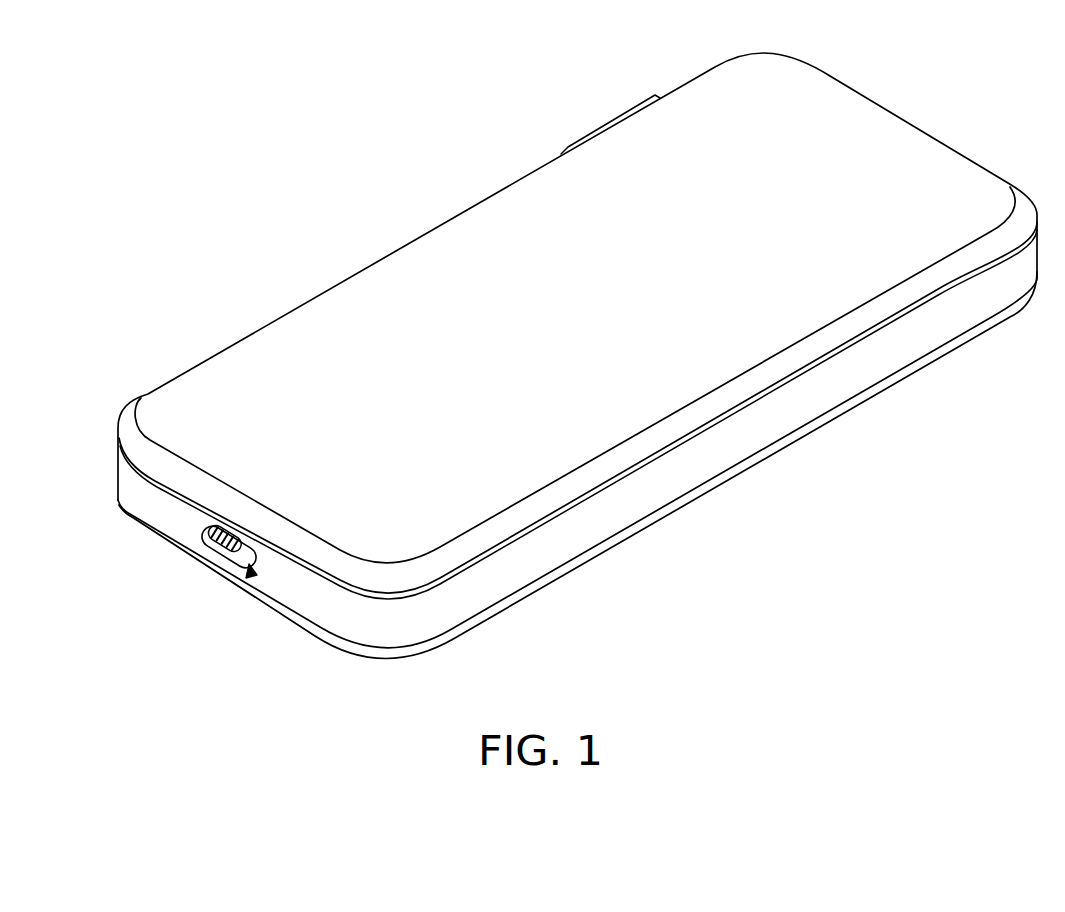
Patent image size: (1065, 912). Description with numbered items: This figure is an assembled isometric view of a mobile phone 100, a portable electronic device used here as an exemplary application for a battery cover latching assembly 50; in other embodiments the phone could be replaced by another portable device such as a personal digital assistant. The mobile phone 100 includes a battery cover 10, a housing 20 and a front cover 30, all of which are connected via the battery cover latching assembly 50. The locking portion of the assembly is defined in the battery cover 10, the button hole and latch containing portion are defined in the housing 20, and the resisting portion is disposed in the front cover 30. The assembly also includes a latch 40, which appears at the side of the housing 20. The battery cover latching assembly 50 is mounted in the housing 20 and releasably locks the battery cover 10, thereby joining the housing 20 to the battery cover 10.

The mobile phone 100 is at (552, 78).
The battery cover 10 is at (292, 360).
The housing 20 is at (162, 510).
The front cover 30 is at (603, 543).
The latch 40 is at (218, 553).
The battery cover latching assembly 50 is at (251, 576).